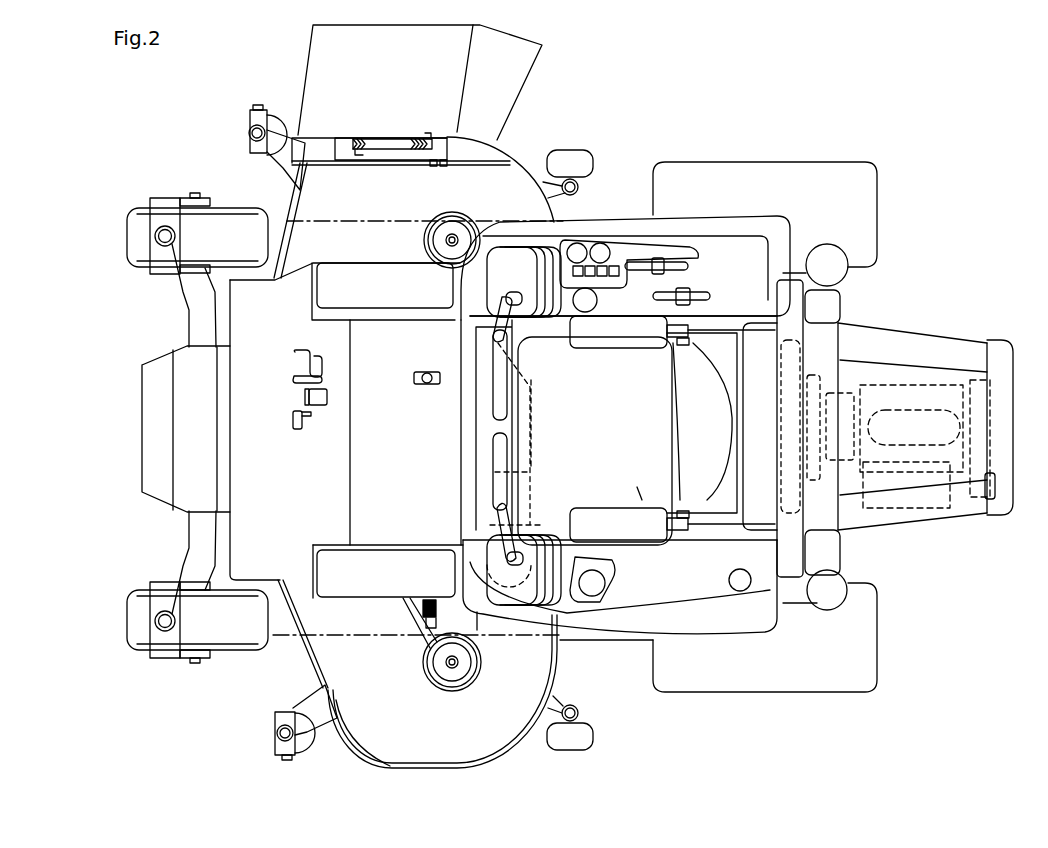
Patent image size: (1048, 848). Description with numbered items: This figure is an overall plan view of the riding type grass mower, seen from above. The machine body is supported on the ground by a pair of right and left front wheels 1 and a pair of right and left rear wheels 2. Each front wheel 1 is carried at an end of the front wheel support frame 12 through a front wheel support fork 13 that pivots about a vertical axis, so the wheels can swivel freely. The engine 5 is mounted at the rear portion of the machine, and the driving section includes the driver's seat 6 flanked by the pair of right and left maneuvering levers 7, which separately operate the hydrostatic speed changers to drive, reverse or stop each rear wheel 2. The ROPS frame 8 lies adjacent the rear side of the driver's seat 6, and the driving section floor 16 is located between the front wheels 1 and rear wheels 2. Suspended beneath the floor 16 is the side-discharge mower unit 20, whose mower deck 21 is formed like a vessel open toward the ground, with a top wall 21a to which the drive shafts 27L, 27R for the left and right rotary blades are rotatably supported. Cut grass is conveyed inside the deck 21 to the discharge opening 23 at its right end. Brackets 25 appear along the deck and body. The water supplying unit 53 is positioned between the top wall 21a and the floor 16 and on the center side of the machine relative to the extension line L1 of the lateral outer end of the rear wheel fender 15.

The front wheel 1 is at (130, 232).
The rear wheel 2 is at (770, 162).
The engine 5 is at (942, 385).
The driver's seat 6 is at (640, 490).
The maneuvering lever 7 is at (497, 448).
The ROPS frame 8 is at (760, 405).
The front wheel support frame 12 is at (190, 322).
The front wheel support fork 13 is at (162, 198).
The rear wheel fender 15 is at (624, 235).
The driving section floor 16 is at (262, 463).
The mower unit 20 is at (280, 668).
The mower deck 21 is at (503, 770).
The top wall 21a is at (372, 730).
The discharge opening 23 is at (350, 105).
The bumper bracket 25 is at (252, 135).
The drive shaft 27R is at (450, 235).
The drive shaft 27L is at (450, 667).
The water supplying unit 53 is at (487, 578).
The extension line L1 is at (355, 638).